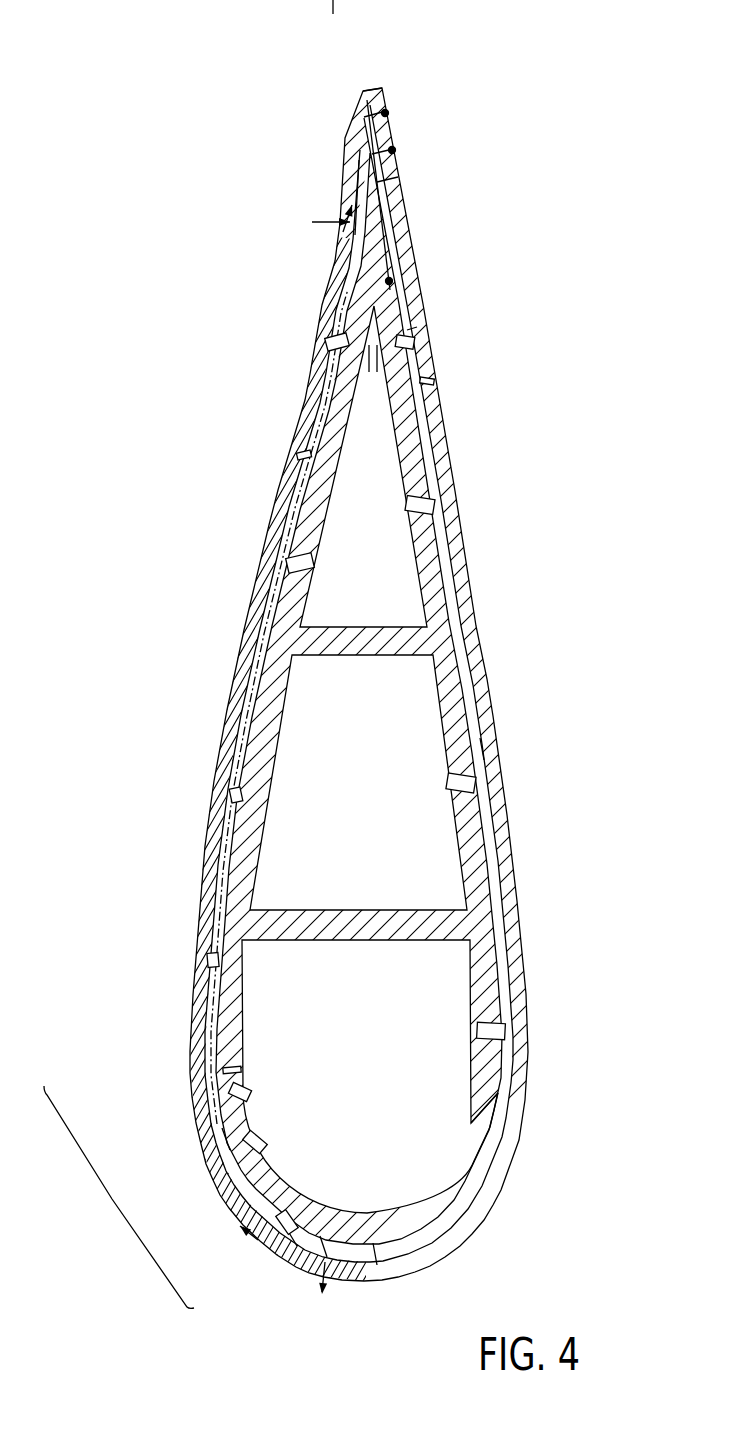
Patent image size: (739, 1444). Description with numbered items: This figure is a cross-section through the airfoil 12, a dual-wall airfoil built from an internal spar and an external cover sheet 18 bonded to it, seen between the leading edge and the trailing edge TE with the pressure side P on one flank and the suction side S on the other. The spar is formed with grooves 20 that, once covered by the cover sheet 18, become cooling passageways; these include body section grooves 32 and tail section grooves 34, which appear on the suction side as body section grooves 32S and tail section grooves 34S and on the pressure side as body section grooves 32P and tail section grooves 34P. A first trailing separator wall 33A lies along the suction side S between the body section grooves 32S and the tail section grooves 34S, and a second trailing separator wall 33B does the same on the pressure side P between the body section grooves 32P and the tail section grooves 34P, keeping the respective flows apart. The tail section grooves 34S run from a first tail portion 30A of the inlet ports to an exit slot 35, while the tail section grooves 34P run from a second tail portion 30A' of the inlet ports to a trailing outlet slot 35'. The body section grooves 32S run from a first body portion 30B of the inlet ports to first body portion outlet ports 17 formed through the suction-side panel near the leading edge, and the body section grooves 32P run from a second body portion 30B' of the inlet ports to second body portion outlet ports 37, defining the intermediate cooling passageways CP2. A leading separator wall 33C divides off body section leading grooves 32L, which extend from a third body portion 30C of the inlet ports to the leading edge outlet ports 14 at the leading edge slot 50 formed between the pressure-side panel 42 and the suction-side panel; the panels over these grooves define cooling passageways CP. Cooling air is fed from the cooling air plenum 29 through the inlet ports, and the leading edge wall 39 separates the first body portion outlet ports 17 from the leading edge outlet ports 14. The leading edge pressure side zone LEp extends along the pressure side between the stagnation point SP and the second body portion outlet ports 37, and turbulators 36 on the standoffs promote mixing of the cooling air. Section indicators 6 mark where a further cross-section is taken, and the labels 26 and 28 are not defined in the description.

The airfoil 12 is at (505, 82).
The leading edge outlet ports 14 is at (293, 1212).
The first body portion outlet ports 17 is at (415, 1318).
The cover sheet 18 is at (207, 1172).
The grooves 20 is at (418, 98).
The suction side skin 26 is at (495, 855).
The trailing edge cavity 28 is at (400, 292).
The cooling air plenum 29 is at (410, 762).
The first tail portion of the inlet ports 30A is at (440, 331).
The second tail portion of the inlet ports 30A' is at (305, 352).
The first body portion of the inlet ports 30B is at (480, 772).
The second body portion of the inlet ports 30B' is at (277, 572).
The third body portion of the inlet ports 30C is at (296, 1186).
The body section grooves 32 is at (455, 640).
The pressure side body section grooves 32P is at (250, 735).
The suction side body section grooves 32S is at (478, 742).
The body section leading grooves 32L is at (225, 1130).
The first trailing separator wall 33A is at (435, 383).
The second trailing separator wall 33B is at (302, 452).
The leading separator wall 33C is at (218, 1070).
The tail section grooves 34 is at (395, 262).
The pressure side tail section grooves 34P is at (345, 290).
The suction side tail section grooves 34S is at (412, 322).
The exit slot 35 is at (402, 126).
The trailing outlet slot 35' is at (327, 198).
The turbulator 36 is at (394, 151).
The second body portion outlet ports 37 is at (185, 1040).
The leading edge wall 39 is at (330, 1252).
The pressure-side panel 42 is at (205, 858).
The leading edge slot 50 is at (285, 1232).
The section line 6 is at (325, 768).
The cooling passageways CP is at (273, 1207).
The cooling passageways CP2 is at (258, 655).
The leading edge pressure side zone LEp is at (112, 1199).
The pressure side P is at (155, 893).
The suction side S is at (540, 1010).
The stagnation point SP is at (248, 1250).
The trailing edge TE is at (362, 88).